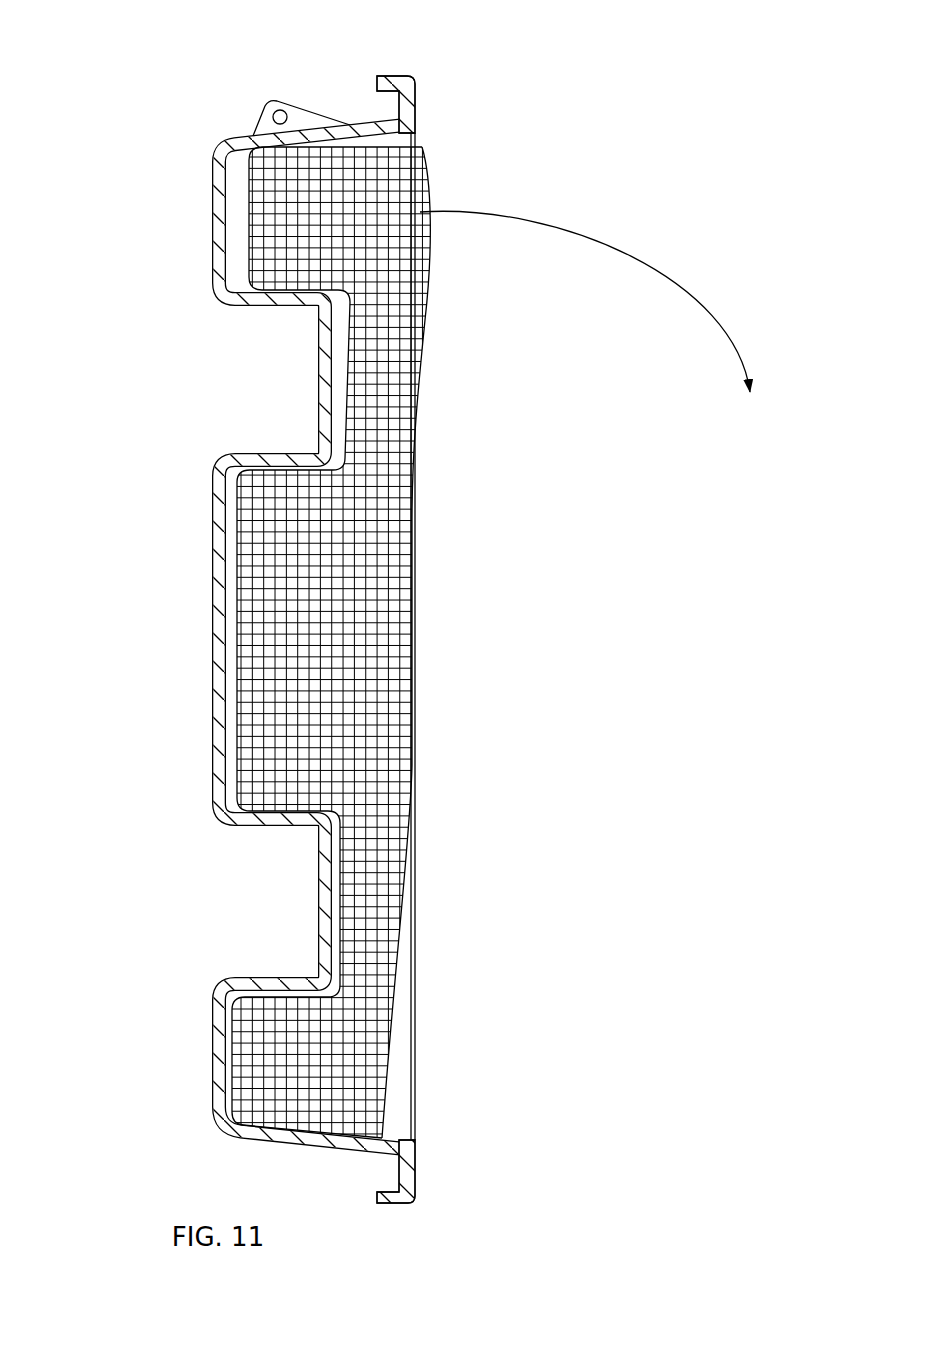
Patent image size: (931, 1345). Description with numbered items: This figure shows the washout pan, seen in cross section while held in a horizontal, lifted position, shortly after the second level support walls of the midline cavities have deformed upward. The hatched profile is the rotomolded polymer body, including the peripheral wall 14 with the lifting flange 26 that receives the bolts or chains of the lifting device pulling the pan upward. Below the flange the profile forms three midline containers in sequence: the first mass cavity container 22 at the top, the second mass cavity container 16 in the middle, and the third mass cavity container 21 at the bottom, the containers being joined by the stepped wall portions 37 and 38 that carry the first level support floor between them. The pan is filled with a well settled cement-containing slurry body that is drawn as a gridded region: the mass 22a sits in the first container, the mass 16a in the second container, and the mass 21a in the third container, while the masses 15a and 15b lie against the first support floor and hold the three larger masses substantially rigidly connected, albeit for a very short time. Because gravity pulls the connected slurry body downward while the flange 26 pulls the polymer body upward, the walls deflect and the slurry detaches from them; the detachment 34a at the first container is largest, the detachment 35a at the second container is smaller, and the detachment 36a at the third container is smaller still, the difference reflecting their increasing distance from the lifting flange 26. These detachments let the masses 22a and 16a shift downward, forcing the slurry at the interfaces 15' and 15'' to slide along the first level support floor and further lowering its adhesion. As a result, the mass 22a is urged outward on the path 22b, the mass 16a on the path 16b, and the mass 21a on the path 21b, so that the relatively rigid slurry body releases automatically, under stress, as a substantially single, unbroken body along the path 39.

The peripheral wall 14 is at (352, 129).
The lifting flange 26 is at (271, 116).
The first mass cavity container 22 is at (219, 243).
The detachment 34a is at (249, 137).
The mass 22a is at (344, 221).
The path 22b is at (370, 232).
The upper web 37 is at (335, 390).
The interface 15' is at (256, 416).
The mass 15a is at (388, 407).
The path 39 is at (594, 319).
The detachment 35a is at (307, 464).
The second mass cavity container 16 is at (225, 652).
The mass 16a is at (352, 701).
The path 16b is at (342, 540).
The mass 15b is at (383, 897).
The interface 15'' is at (247, 859).
The lower web 38 is at (333, 922).
The mass 21a is at (344, 1045).
The detachment 36a is at (307, 986).
The third mass cavity container 21 is at (226, 1053).
The path 21b is at (385, 1128).